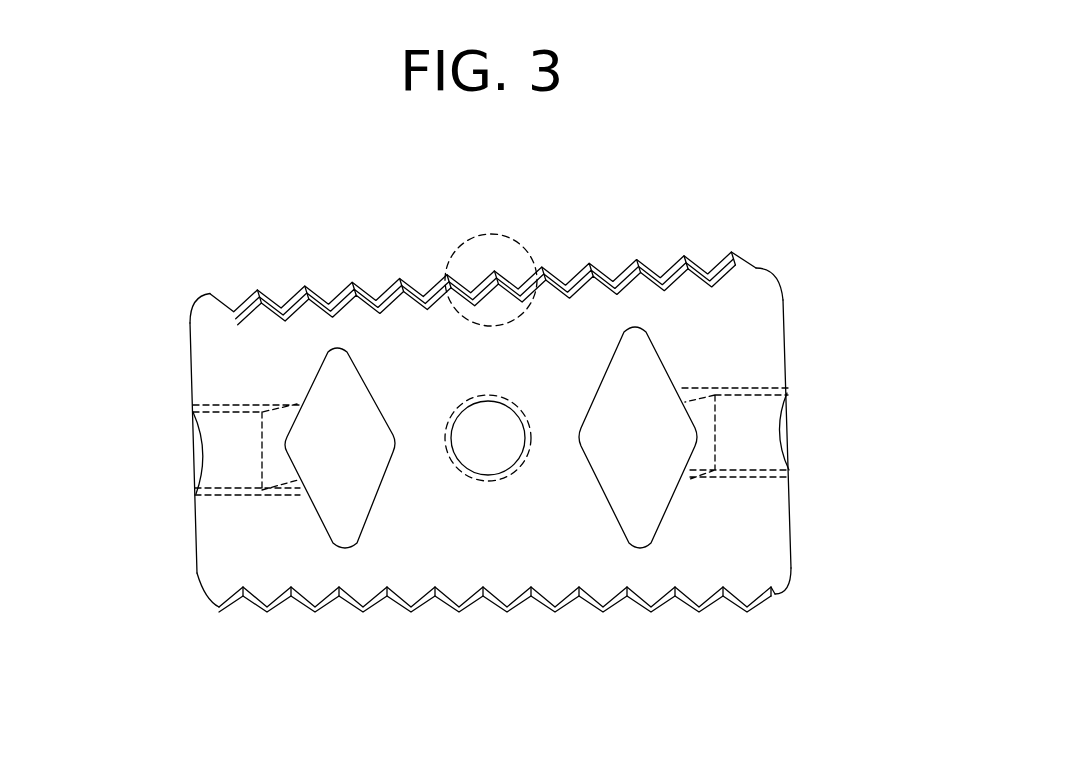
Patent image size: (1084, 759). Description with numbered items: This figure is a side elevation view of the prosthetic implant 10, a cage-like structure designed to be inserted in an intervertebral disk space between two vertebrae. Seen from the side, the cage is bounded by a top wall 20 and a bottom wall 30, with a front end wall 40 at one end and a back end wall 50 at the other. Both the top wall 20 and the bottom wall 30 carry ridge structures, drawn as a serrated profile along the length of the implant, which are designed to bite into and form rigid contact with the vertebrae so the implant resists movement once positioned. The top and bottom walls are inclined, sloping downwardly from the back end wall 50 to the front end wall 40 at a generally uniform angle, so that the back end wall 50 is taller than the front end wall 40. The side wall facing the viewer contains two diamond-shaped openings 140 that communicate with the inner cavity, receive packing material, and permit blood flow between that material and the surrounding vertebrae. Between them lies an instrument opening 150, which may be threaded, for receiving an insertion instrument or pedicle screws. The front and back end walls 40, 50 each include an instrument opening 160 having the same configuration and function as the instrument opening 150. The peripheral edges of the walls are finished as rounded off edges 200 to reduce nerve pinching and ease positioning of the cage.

The prosthetic implant 10 is at (764, 228).
The top wall 20 is at (353, 283).
The bottom wall 30 is at (393, 620).
The front end wall 40 is at (191, 365).
The back end wall 50 is at (788, 352).
The openings 140 is at (358, 505).
The instrument opening 150 is at (502, 420).
The instrument opening 160 is at (192, 458).
The rounded off edges 200 is at (781, 283).